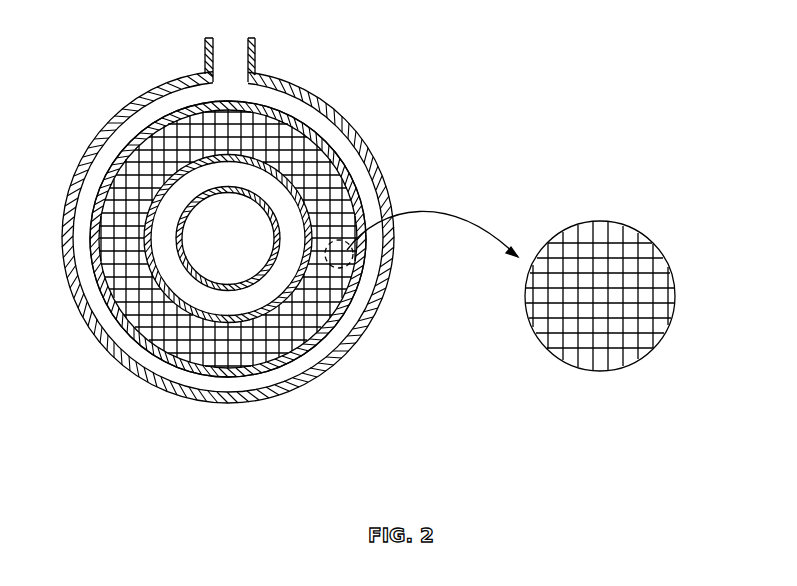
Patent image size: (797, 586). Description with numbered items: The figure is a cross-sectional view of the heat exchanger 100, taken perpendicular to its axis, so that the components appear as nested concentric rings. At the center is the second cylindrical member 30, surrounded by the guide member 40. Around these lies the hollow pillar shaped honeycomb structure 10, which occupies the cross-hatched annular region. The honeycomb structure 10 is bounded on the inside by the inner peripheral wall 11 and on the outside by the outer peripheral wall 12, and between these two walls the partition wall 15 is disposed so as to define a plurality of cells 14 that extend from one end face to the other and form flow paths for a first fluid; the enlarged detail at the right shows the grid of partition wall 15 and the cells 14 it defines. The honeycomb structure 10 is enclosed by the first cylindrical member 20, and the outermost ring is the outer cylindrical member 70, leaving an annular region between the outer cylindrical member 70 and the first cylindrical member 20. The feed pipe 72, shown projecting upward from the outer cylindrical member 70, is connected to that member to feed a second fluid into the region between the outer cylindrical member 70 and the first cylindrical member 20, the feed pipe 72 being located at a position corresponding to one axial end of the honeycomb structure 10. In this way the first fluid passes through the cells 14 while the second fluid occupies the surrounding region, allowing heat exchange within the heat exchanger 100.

The heat exchanger 100 is at (254, 242).
The outer cylindrical member 70 is at (345, 347).
The feed pipe 72 is at (255, 58).
The first cylindrical member 20 is at (340, 317).
The outer peripheral wall 12 is at (358, 280).
The hollow pillar shaped honeycomb structure 10 is at (352, 183).
The inner peripheral wall 11 is at (333, 195).
The guide member 40 is at (320, 146).
The second cylindrical member 30 is at (254, 188).
The cells 14 is at (628, 248).
The partition wall 15 is at (638, 283).